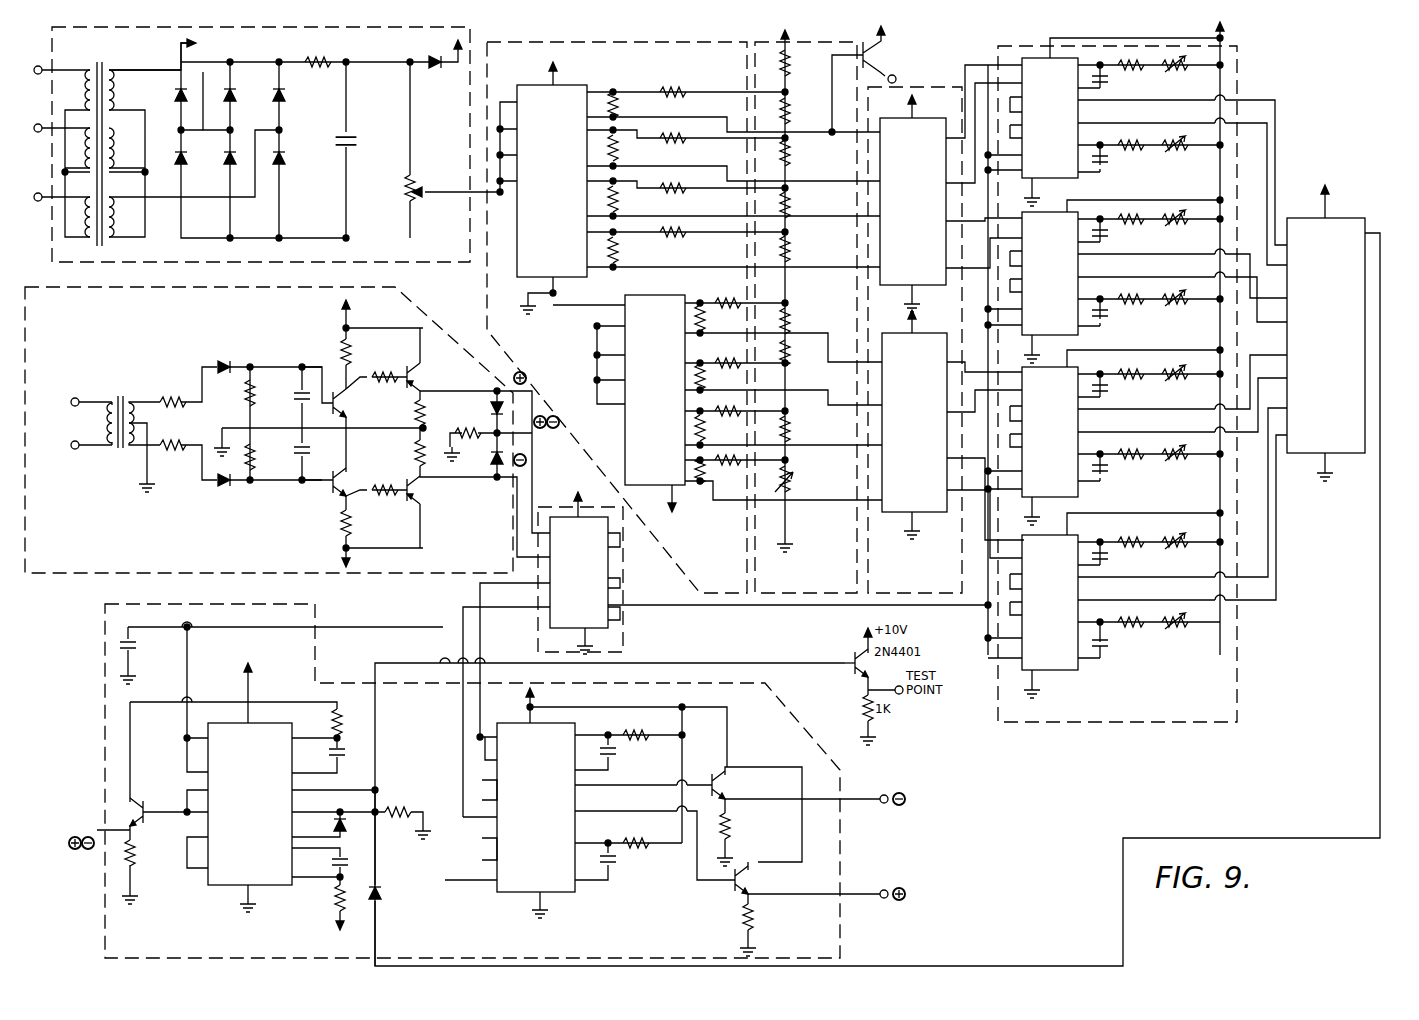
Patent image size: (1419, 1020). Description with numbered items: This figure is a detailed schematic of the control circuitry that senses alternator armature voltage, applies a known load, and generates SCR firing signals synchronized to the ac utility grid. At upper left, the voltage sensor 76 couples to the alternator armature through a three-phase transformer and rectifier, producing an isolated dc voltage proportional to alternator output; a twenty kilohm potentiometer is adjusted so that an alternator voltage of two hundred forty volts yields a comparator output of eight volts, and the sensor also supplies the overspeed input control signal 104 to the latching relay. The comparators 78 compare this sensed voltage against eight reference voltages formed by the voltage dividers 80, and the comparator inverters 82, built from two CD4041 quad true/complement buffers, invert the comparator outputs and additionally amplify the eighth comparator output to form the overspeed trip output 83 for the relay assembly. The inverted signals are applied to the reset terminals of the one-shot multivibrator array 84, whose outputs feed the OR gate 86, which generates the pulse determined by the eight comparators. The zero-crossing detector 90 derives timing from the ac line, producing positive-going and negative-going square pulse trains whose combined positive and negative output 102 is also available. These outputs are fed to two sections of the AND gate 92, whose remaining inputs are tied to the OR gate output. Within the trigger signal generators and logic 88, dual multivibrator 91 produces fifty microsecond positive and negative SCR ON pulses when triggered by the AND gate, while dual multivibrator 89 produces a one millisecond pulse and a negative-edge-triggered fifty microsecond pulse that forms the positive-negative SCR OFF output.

The voltage sensor 76 is at (135, 266).
The comparators 78 is at (666, 38).
The voltage dividers 80 is at (758, 600).
The comparator inverters 82 is at (872, 594).
The overspeed trip output 83 is at (898, 79).
The one-shot multivibrator array 84 is at (1035, 726).
The OR gate 86 is at (1302, 455).
The trigger signal generators and logic 88 is at (842, 945).
The dual multivibrator 89 is at (236, 885).
The zero-crossing detector 90 is at (105, 287).
The dual multivibrator 91 is at (512, 890).
The AND gate 92 is at (626, 606).
The zero crossing output 102 is at (574, 435).
The overspeed input control signal 104 is at (274, 49).